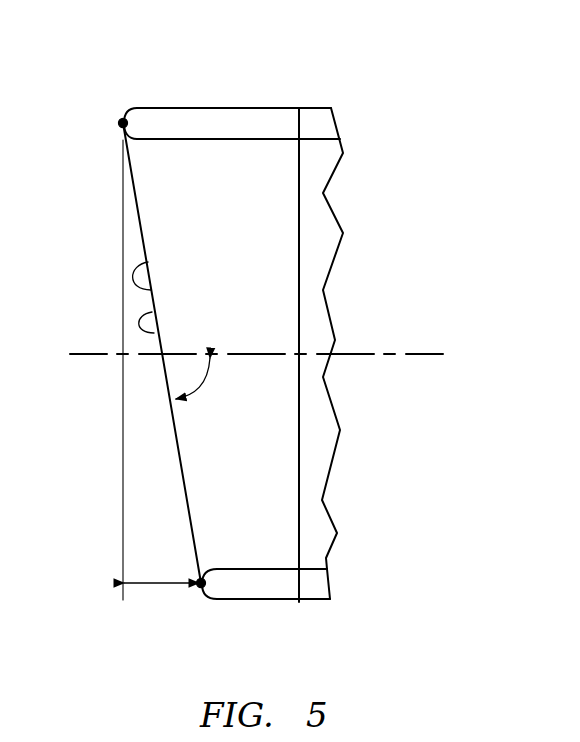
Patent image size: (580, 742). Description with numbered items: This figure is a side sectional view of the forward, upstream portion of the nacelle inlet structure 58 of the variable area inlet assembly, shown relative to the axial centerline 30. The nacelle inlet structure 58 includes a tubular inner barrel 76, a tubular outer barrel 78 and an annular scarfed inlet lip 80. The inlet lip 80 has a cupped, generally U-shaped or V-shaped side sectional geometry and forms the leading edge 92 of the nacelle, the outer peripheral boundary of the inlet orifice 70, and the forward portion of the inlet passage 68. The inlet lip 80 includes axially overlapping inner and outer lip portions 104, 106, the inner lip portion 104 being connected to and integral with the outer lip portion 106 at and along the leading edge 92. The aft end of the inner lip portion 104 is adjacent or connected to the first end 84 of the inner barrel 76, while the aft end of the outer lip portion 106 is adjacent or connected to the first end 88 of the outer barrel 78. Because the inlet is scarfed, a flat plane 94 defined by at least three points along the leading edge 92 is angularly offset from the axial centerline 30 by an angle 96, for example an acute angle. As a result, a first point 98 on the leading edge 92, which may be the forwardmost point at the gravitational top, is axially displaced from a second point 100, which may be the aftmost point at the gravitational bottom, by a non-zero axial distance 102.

The axial centerline 30 is at (292, 311).
The nacelle inlet structure 58 is at (336, 95).
The inlet passage 68 is at (258, 204).
The inlet orifice 70 is at (128, 162).
The inner barrel 76 is at (315, 568).
The outer barrel 78 is at (319, 600).
The inlet lip 80 is at (232, 111).
The first end of the inner barrel 84 is at (299, 568).
The first end of the outer barrel 88 is at (301, 588).
The leading edge 92 is at (151, 290).
The flat plane 94 is at (154, 333).
The angle 96 is at (213, 388).
The first point 98 is at (120, 122).
The second point 100 is at (198, 592).
The axial distance 102 is at (159, 590).
The inner lip portion 104 is at (170, 141).
The outer lip portion 106 is at (255, 107).